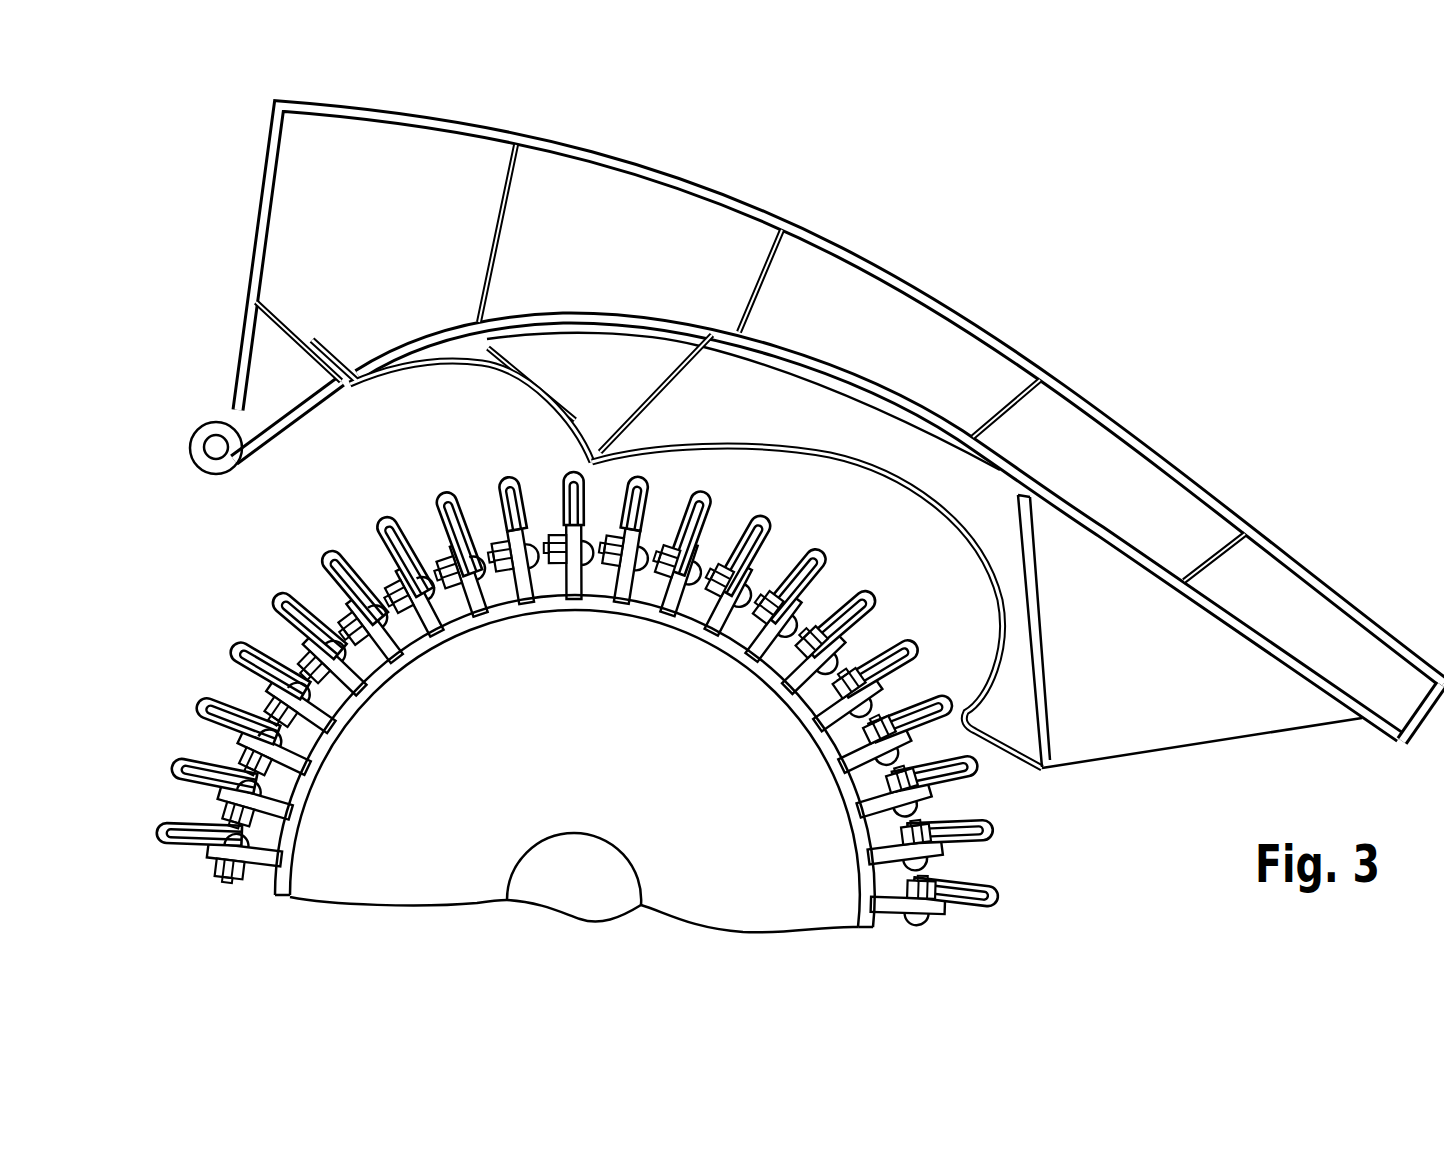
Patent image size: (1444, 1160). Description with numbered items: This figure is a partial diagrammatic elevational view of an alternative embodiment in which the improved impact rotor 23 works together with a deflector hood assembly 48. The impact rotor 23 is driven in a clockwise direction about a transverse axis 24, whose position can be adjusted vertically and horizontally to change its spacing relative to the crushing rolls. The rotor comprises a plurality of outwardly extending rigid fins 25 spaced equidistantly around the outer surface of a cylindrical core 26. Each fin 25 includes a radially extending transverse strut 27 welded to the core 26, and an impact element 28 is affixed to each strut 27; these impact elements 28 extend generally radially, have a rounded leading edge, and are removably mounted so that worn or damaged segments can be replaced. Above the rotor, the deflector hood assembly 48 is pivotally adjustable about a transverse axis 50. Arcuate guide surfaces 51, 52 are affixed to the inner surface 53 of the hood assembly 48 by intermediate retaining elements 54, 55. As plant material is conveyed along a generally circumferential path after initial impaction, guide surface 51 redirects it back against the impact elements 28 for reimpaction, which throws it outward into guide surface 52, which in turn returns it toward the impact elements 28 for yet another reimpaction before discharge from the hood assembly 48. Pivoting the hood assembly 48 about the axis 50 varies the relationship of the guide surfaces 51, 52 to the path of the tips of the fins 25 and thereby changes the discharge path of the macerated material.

The impact rotor 23 is at (695, 692).
The transverse axis 24 is at (555, 852).
The rigid fins 25 is at (655, 692).
The cylindrical core 26 is at (717, 640).
The transverse strut 27 is at (812, 630).
The impact element 28 is at (810, 556).
The deflector hood assembly 48 is at (802, 437).
The transverse axis 50 is at (216, 440).
The arcuate guide surface 51 is at (457, 362).
The arcuate guide surface 52 is at (885, 492).
The inner surface 53 is at (833, 376).
The intermediate retaining element 54 is at (648, 382).
The intermediate retaining element 55 is at (1052, 624).